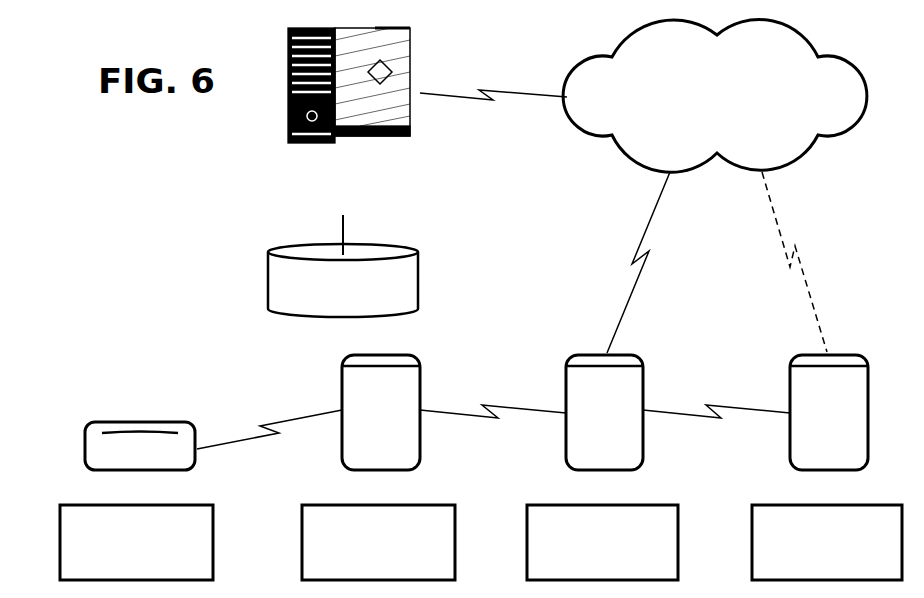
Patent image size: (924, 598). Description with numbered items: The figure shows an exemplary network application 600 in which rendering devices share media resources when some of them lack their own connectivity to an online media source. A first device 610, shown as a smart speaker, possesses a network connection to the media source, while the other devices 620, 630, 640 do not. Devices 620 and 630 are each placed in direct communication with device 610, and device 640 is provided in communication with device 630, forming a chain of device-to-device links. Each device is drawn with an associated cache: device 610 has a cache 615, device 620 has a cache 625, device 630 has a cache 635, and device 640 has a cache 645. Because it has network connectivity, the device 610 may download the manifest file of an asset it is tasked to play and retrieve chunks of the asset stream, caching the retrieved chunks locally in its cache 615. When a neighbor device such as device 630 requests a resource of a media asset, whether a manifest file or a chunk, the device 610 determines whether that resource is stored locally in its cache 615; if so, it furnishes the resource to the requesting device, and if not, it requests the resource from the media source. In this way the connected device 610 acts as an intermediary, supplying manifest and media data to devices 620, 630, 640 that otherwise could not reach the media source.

The content delivery system 600 is at (177, 120).
The first device 610 is at (566, 375).
The cache 615 is at (585, 563).
The device 620 is at (790, 375).
The cache of network node 620 625 is at (810, 563).
The device 630 is at (342, 375).
The cache of network node 630 635 is at (361, 563).
The device 640 is at (84, 449).
The cache of client device 640 645 is at (120, 563).